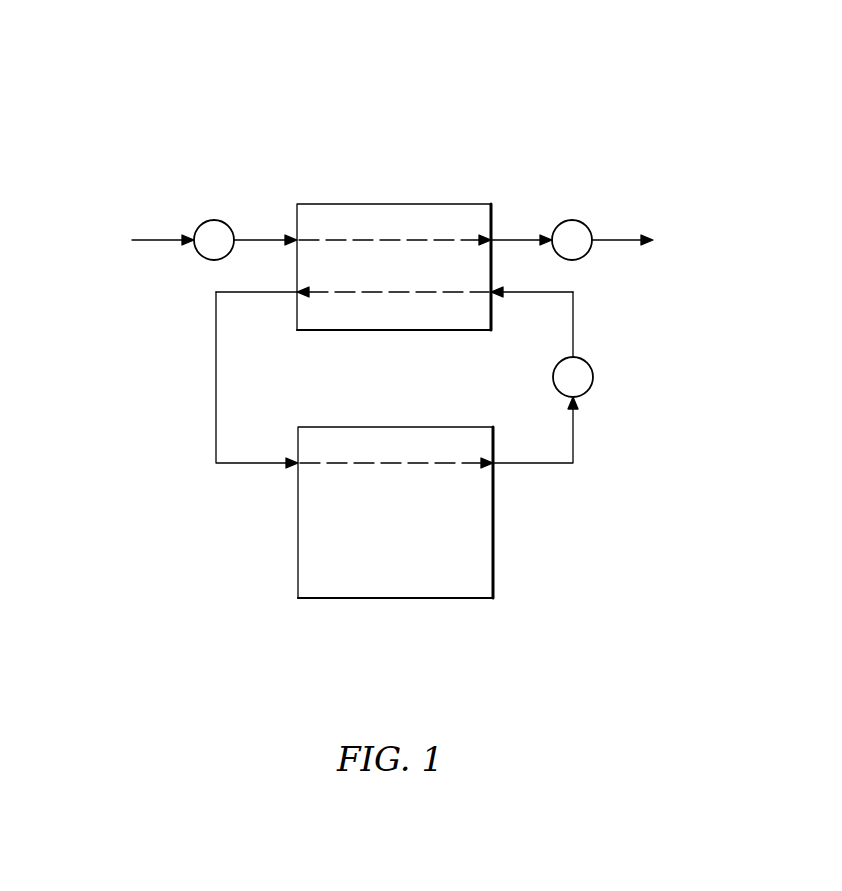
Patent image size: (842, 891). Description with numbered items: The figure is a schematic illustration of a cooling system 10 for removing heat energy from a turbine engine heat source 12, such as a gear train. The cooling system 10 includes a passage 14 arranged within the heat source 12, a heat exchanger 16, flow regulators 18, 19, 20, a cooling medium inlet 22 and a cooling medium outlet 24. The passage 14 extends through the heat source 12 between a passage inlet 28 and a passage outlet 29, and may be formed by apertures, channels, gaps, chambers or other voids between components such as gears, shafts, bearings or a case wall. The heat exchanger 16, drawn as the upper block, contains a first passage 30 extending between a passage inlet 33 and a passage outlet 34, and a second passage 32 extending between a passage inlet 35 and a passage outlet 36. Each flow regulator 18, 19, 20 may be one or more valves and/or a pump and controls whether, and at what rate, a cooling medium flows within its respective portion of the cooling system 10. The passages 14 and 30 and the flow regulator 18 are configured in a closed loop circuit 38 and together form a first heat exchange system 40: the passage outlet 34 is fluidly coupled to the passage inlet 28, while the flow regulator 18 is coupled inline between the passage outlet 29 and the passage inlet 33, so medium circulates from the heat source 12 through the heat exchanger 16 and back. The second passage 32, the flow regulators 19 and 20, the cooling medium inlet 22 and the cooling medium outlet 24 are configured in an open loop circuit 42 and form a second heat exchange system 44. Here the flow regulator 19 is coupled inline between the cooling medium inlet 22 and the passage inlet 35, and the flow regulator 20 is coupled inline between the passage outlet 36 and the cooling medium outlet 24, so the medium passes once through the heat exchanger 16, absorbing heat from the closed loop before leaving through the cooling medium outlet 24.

The cooling system 10 is at (128, 71).
The turbine engine heat source 12 is at (450, 600).
The passage 14 is at (331, 466).
The heat exchanger 16 is at (373, 204).
The flow regulator 18 is at (593, 377).
The flow regulator 19 is at (214, 220).
The flow regulator 20 is at (573, 220).
The cooling medium inlet 22 is at (132, 240).
The cooling medium outlet 24 is at (653, 240).
The passage inlet 28 is at (298, 462).
The passage outlet 29 is at (493, 462).
The first passage 30 is at (362, 294).
The second passage 32 is at (424, 240).
The passage inlet 33 is at (493, 294).
The passage outlet 34 is at (297, 292).
The passage inlet 35 is at (297, 240).
The passage outlet 36 is at (491, 240).
The closed loop circuit 38 is at (216, 414).
The first heat exchange system 40 is at (180, 382).
The open loop circuit 42 is at (155, 240).
The second heat exchange system 44 is at (337, 158).